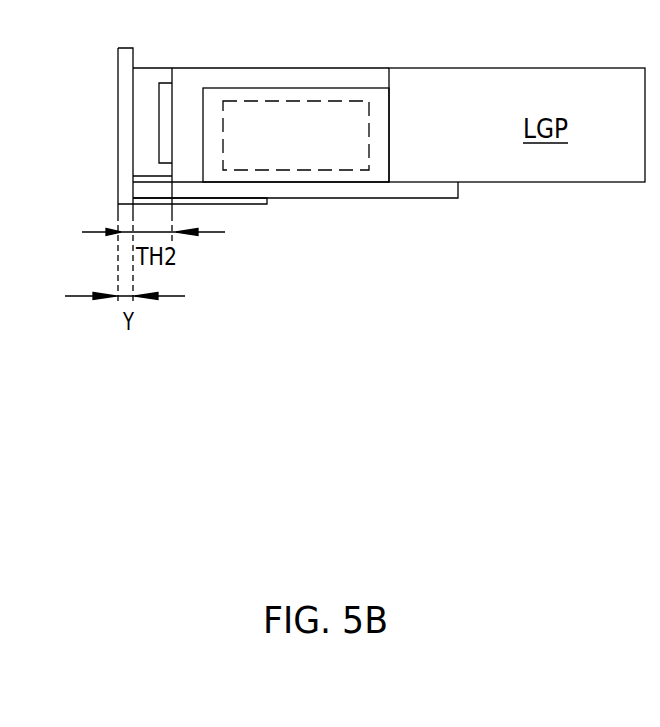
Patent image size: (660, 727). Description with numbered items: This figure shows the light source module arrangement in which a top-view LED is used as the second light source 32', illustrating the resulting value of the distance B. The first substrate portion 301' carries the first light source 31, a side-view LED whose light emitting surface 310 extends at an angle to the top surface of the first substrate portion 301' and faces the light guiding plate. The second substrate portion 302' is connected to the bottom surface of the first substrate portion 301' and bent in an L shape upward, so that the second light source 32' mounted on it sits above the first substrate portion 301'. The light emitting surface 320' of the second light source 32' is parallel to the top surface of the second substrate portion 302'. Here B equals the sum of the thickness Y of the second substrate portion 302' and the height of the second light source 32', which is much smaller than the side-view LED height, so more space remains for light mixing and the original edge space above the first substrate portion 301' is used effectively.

The second substrate portion 302' is at (164, 113).
The second light source 32' is at (227, 141).
The light emitting surface 320' is at (117, 138).
The first light source 31 is at (389, 127).
The light emitting surface 310 is at (272, 118).
The first substrate portion 301' is at (295, 217).